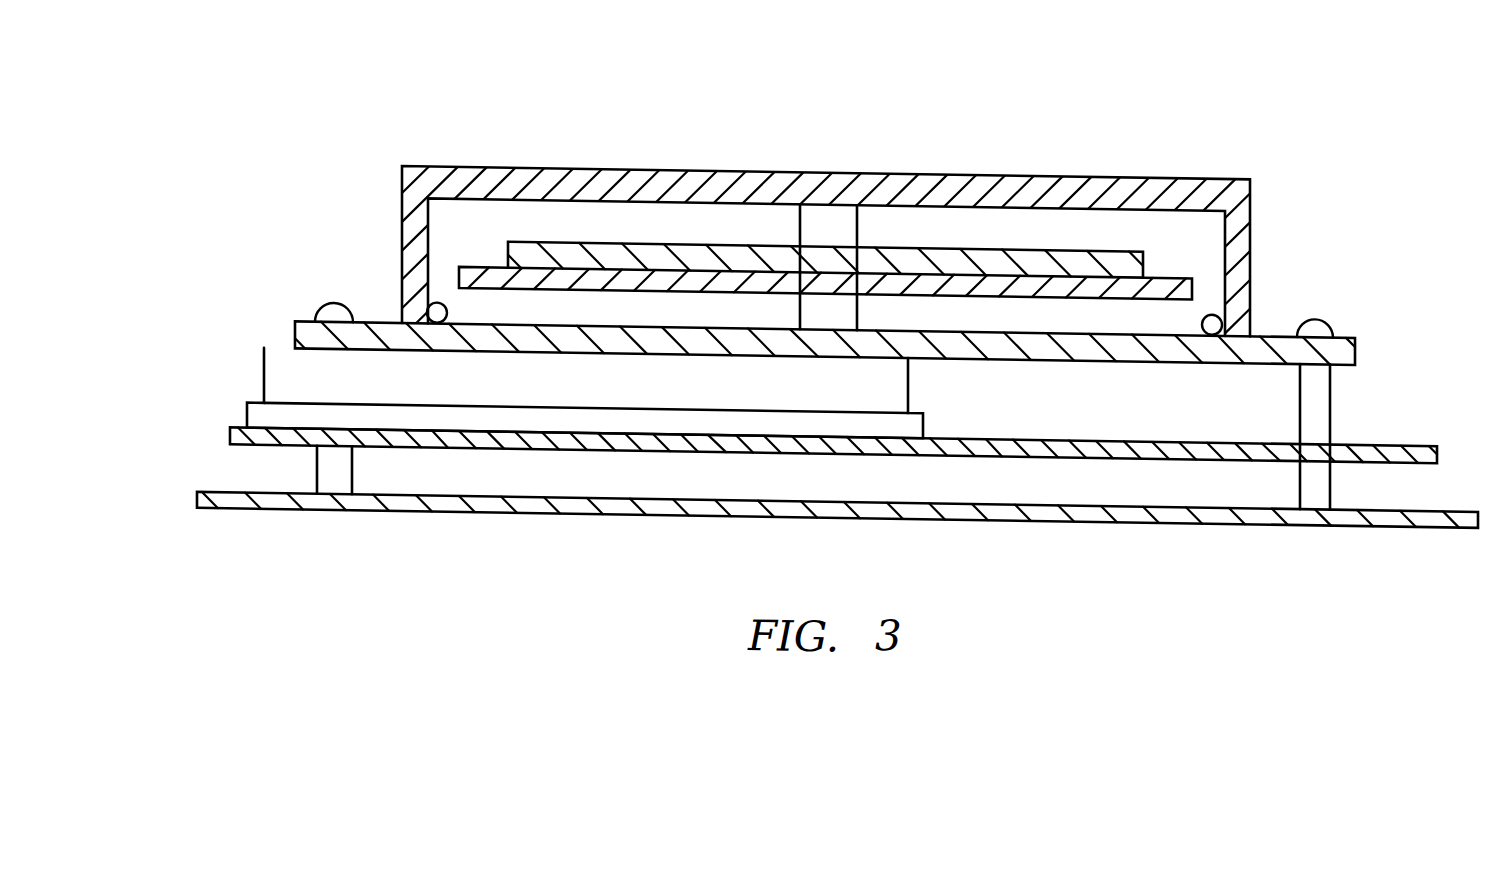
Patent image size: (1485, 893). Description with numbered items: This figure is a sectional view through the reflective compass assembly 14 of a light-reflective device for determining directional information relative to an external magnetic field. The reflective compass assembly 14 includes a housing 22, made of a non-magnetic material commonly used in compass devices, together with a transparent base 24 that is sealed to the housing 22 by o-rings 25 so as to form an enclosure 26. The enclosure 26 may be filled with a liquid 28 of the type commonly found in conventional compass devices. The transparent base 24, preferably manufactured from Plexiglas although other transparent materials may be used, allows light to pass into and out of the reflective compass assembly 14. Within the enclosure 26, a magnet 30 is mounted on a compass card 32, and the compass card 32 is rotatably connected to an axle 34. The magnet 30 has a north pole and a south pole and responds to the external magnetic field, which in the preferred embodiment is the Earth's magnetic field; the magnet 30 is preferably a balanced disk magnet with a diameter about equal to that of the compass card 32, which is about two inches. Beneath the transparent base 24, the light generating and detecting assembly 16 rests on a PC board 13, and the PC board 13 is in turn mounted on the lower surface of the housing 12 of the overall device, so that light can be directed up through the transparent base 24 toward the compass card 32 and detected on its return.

The housing 12 is at (245, 492).
The PC board 13 is at (377, 447).
The reflective compass assembly 14 is at (829, 182).
The light generating and detecting assembly 16 is at (836, 378).
The housing 22 is at (1260, 192).
The transparent base 24 is at (475, 354).
The o-rings 25 is at (441, 300).
The enclosure 26 is at (564, 214).
The liquid 28 is at (853, 193).
The magnet 30 is at (1060, 238).
The compass card 32 is at (1193, 272).
The axle 34 is at (830, 221).